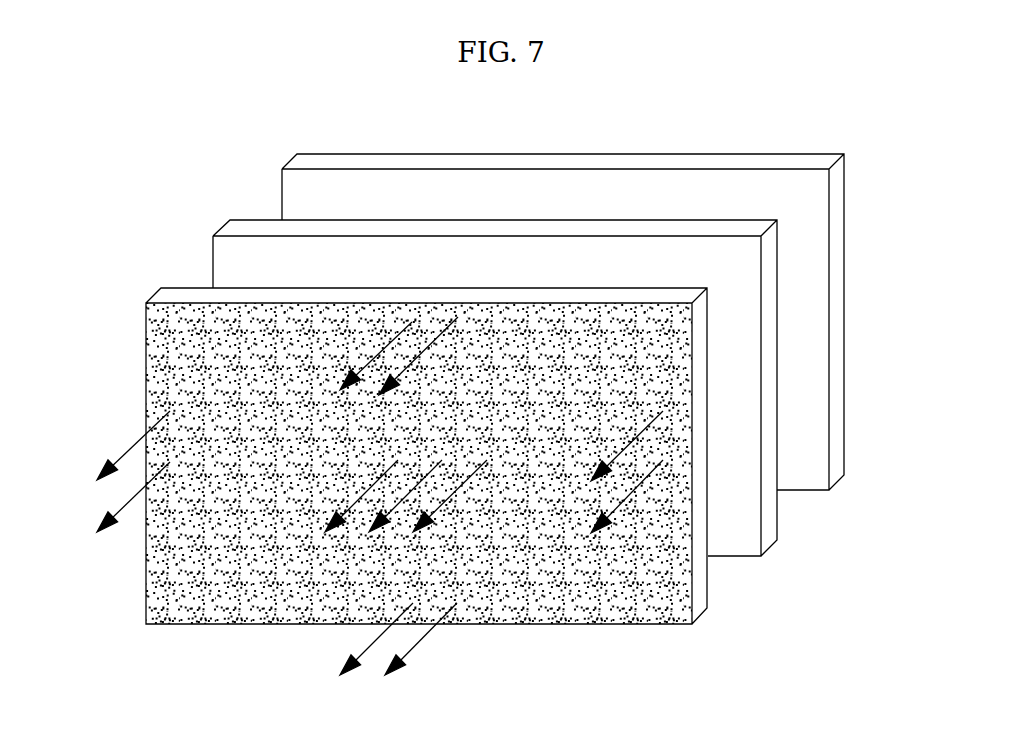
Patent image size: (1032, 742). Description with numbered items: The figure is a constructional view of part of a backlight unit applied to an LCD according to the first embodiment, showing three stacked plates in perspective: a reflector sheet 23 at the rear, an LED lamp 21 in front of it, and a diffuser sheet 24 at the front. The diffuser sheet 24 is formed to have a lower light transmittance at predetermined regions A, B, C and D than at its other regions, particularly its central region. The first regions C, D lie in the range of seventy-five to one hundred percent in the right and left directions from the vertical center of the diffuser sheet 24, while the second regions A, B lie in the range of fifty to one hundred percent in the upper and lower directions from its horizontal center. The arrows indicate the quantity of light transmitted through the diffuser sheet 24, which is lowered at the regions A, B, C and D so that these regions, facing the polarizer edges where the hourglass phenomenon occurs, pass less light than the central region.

The reflector sheet 23 is at (296, 162).
The LED lamp 21 is at (238, 227).
The diffuser sheet 24 is at (170, 293).
The second region (upper predetermined region) A is at (463, 313).
The second region (lower predetermined region) B is at (473, 618).
The first region (left predetermined region) C is at (163, 404).
The first region (right predetermined region) D is at (678, 517).